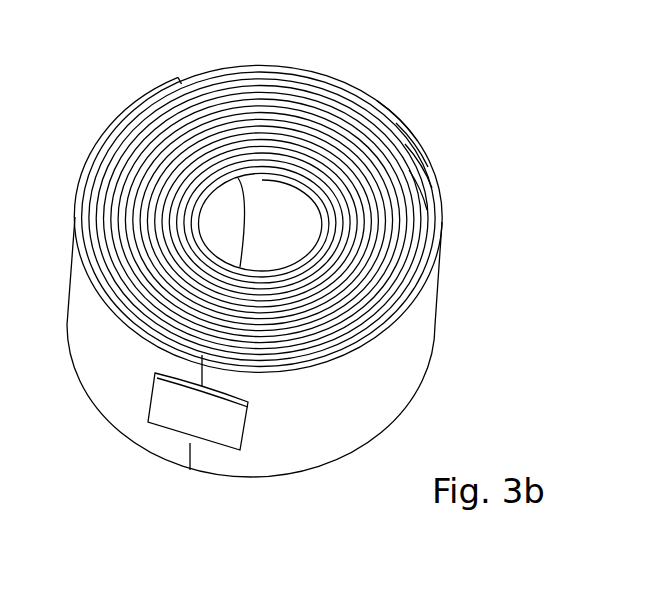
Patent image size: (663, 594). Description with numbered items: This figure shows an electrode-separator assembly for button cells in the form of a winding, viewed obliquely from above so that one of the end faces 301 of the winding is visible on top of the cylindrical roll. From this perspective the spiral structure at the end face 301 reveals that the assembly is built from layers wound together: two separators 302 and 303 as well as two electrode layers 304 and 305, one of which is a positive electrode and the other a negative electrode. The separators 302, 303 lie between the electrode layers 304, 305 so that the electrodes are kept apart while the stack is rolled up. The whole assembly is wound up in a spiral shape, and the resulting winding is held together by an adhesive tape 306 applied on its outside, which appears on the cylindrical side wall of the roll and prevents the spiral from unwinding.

The end face 301 is at (297, 155).
The separator 302 is at (378, 105).
The separator 303 is at (400, 128).
The electrode layer 304 is at (427, 162).
The electrode layer 305 is at (425, 193).
The adhesive tape 306 is at (172, 418).